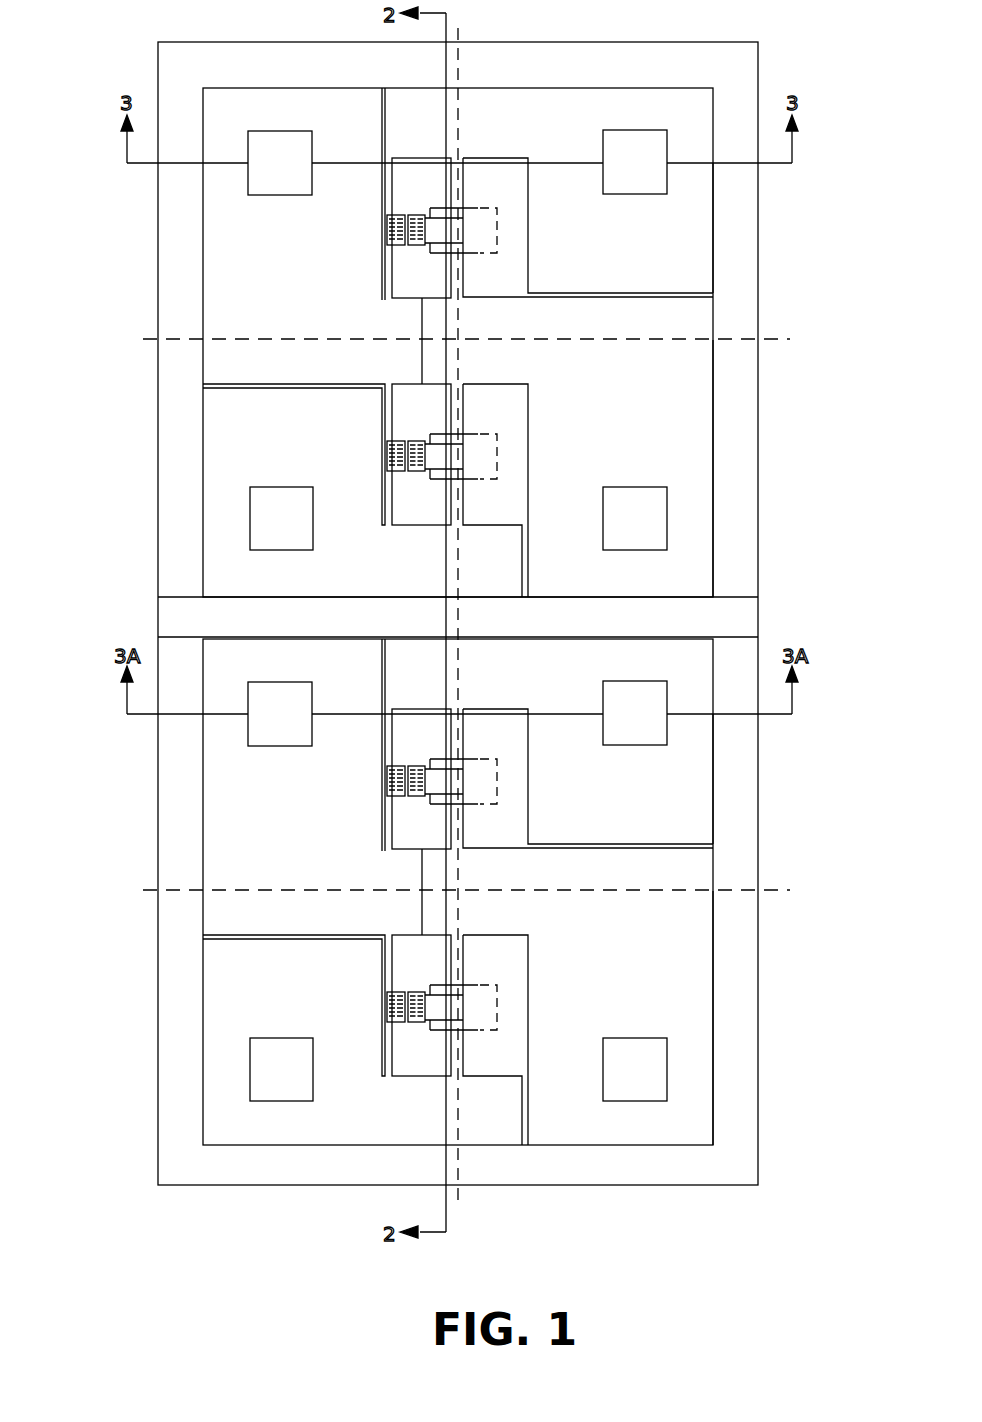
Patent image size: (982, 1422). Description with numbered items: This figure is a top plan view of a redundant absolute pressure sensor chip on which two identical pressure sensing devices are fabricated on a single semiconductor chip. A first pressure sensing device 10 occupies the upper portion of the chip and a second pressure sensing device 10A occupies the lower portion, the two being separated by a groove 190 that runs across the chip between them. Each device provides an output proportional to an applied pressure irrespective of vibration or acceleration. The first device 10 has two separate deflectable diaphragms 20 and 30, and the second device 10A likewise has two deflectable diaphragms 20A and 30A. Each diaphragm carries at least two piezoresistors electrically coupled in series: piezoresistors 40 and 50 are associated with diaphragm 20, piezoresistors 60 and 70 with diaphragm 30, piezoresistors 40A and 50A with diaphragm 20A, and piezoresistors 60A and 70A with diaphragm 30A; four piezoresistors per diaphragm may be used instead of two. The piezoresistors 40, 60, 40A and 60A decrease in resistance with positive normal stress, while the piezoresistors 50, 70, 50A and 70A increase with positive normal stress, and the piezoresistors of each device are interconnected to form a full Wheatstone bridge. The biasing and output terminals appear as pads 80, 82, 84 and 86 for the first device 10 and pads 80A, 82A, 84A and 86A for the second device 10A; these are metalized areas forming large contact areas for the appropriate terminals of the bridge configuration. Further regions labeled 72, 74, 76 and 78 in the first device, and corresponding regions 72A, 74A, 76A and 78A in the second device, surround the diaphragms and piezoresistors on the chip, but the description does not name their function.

The first pressure sensing device 10 is at (795, 60).
The second pressure sensing device 10A is at (795, 611).
The groove 190 is at (173, 618).
The deflectable diaphragm 20 is at (505, 180).
The deflectable diaphragm 20A is at (505, 731).
The deflectable diaphragm 30 is at (505, 406).
The deflectable diaphragm 30A is at (505, 957).
The piezoresistor 40 is at (395, 250).
The piezoresistor 40A is at (395, 801).
The piezoresistor 50 is at (417, 212).
The piezoresistor 50A is at (417, 763).
The piezoresistor 60 is at (395, 476).
The piezoresistor 60A is at (395, 1027).
The piezoresistor 70 is at (417, 438).
The piezoresistor 70A is at (417, 989).
The plate 72 is at (687, 240).
The plate 72A is at (687, 791).
The plate 74 is at (230, 449).
The plate 74A is at (230, 1000).
The plate 76 is at (700, 413).
The plate 76A is at (700, 964).
The plate 78 is at (230, 255).
The plate 78A is at (230, 806).
The pad 80 is at (268, 174).
The pad 80A is at (262, 725).
The pad 82 is at (623, 173).
The pad 82A is at (617, 724).
The pad 84 is at (269, 529).
The pad 84A is at (263, 1080).
The pad 86 is at (623, 529).
The pad 86A is at (617, 1080).